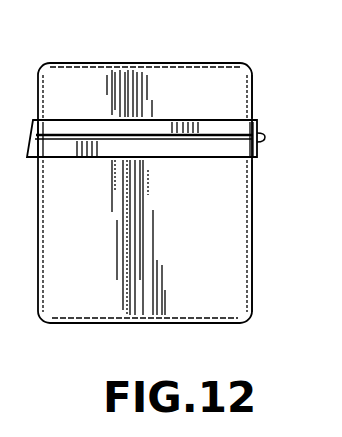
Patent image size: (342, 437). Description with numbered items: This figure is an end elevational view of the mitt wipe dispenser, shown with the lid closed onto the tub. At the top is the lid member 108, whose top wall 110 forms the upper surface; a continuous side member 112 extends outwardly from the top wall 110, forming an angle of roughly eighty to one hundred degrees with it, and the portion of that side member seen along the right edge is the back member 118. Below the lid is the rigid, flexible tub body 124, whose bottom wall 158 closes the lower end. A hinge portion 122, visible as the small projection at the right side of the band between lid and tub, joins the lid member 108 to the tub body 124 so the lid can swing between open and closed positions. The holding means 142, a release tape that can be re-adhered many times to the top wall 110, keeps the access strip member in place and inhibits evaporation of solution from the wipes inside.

The lid member 108 is at (248, 63).
The top wall 110 is at (195, 63).
The continuous side member 112 is at (80, 82).
The back member 118 is at (255, 90).
The hinge portion 122 is at (262, 135).
The tub body 124 is at (257, 251).
The holding means 142 is at (195, 229).
The bottom wall 158 is at (192, 323).